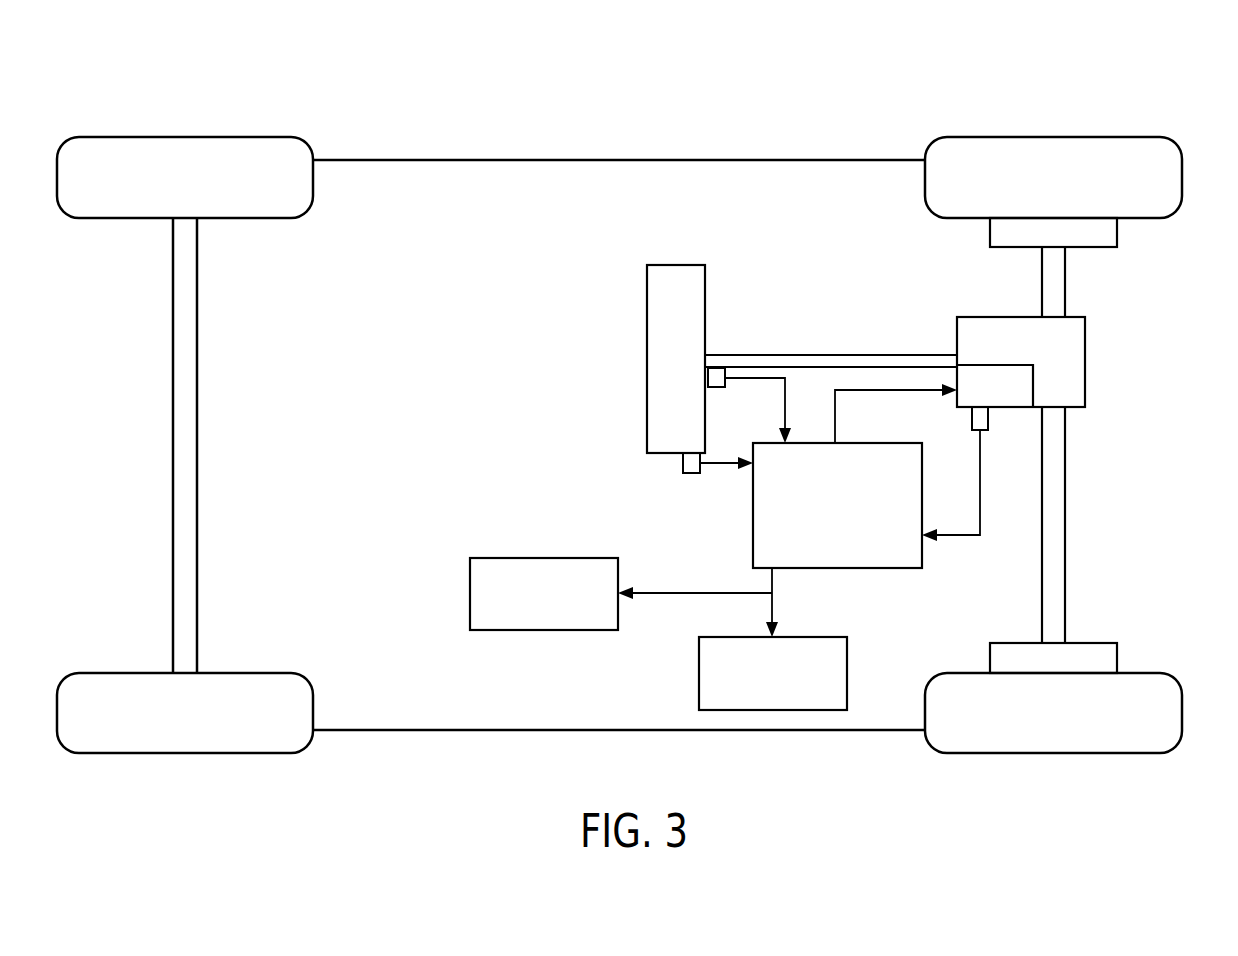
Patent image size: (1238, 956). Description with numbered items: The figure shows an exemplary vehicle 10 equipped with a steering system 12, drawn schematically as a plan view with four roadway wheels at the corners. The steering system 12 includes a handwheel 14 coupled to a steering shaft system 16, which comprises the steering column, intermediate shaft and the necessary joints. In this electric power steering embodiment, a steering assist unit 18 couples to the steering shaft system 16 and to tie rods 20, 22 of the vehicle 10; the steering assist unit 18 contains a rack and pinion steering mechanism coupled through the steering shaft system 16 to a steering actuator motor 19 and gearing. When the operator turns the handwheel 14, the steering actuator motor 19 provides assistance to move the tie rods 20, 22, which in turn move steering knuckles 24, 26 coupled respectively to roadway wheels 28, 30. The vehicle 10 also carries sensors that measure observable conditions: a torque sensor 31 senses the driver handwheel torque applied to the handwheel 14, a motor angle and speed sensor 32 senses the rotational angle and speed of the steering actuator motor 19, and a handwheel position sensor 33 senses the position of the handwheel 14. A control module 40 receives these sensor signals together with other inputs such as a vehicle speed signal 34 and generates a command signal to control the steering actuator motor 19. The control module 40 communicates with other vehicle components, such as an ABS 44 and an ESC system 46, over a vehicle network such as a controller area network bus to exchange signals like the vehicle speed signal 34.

The vehicle 10 is at (835, 97).
The steering system 12 is at (799, 250).
The handwheel 14 is at (677, 265).
The steering shaft system 16 is at (799, 355).
The steering assist unit 18 is at (1085, 340).
The steering actuator motor 19 is at (1023, 398).
The tie rod 20 is at (1065, 290).
The tie rod 22 is at (1065, 482).
The steering knuckle 24 is at (990, 232).
The steering knuckle 26 is at (1019, 643).
The roadway wheel 28 is at (1117, 137).
The roadway wheel 30 is at (1140, 673).
The torque sensor 31 is at (716, 388).
The motor angle and speed sensor 32 is at (982, 432).
The handwheel position sensor 33 is at (690, 474).
The vehicle speed signal 34 is at (876, 583).
The control module 40 is at (922, 472).
The ABS 44 is at (500, 558).
The ESC system 46 is at (699, 672).